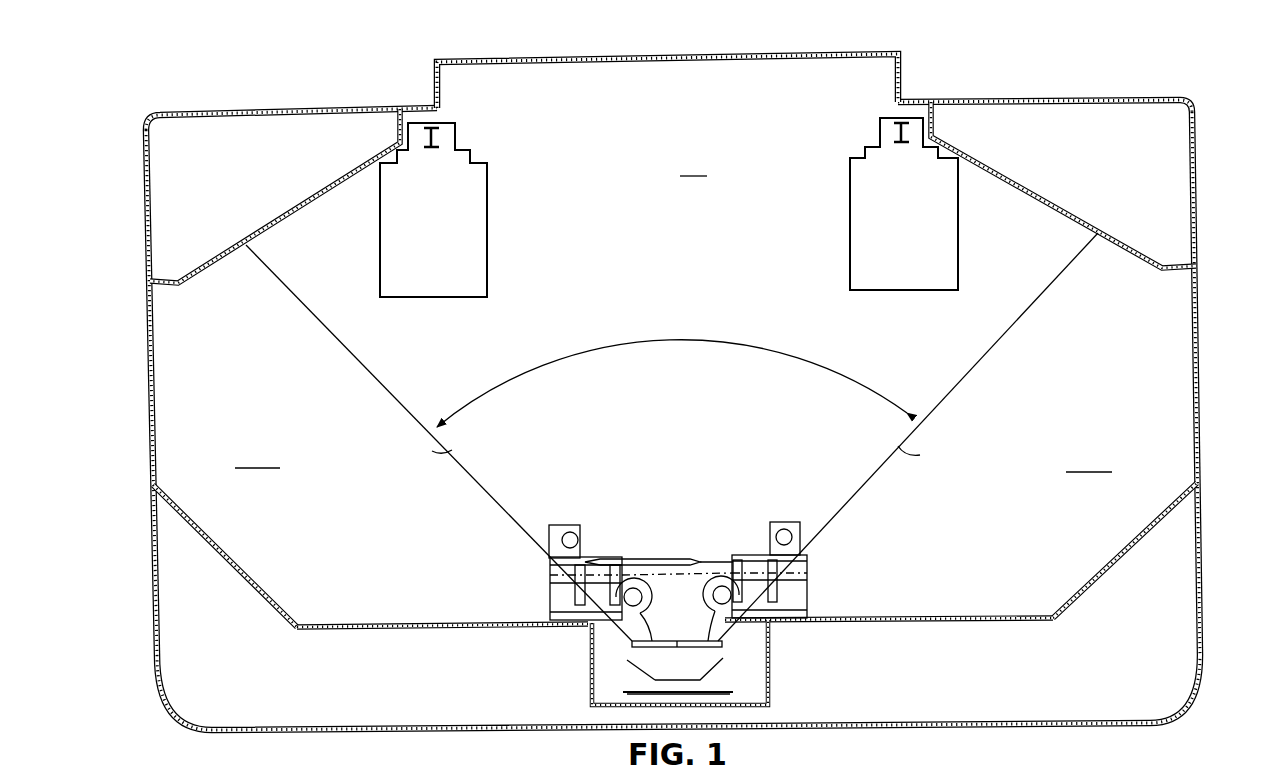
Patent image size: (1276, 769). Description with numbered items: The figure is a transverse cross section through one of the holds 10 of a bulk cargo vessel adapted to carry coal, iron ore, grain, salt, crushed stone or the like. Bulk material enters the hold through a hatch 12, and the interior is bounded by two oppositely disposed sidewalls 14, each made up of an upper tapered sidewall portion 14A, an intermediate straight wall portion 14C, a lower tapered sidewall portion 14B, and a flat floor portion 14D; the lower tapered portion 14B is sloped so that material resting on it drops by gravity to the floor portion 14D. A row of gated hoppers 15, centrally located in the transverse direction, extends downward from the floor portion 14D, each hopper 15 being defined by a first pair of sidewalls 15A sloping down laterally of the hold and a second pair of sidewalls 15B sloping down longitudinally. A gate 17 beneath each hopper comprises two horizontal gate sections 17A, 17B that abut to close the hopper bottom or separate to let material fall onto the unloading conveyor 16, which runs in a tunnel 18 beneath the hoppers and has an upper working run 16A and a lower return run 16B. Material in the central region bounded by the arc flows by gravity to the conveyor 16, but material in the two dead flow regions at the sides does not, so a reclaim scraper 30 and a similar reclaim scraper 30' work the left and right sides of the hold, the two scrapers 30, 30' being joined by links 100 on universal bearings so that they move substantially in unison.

The hold 10 is at (666, 379).
The hatch 12 is at (672, 56).
The sidewall 14 is at (158, 409).
The upper tapered sidewall portion 14A is at (315, 203).
The lower tapered sidewall portion 14B is at (228, 551).
The intermediate straight wall portion 14C is at (143, 352).
The flat floor portion 14D is at (430, 624).
The gated hopper 15 is at (626, 634).
The first pair of hopper sidewalls 15A is at (629, 647).
The second pair of hopper sidewalls 15B is at (677, 634).
The unloading conveyor 16 is at (678, 676).
The upper working run 16A is at (624, 664).
The lower return run 16B is at (630, 693).
The gate 17 is at (624, 671).
The gate section 17A is at (659, 577).
The gate section 17B is at (708, 674).
The tunnel 18 is at (771, 665).
The reclaim scraper 30 is at (558, 572).
The reclaim scraper 30' is at (802, 570).
The link 100 is at (672, 633).